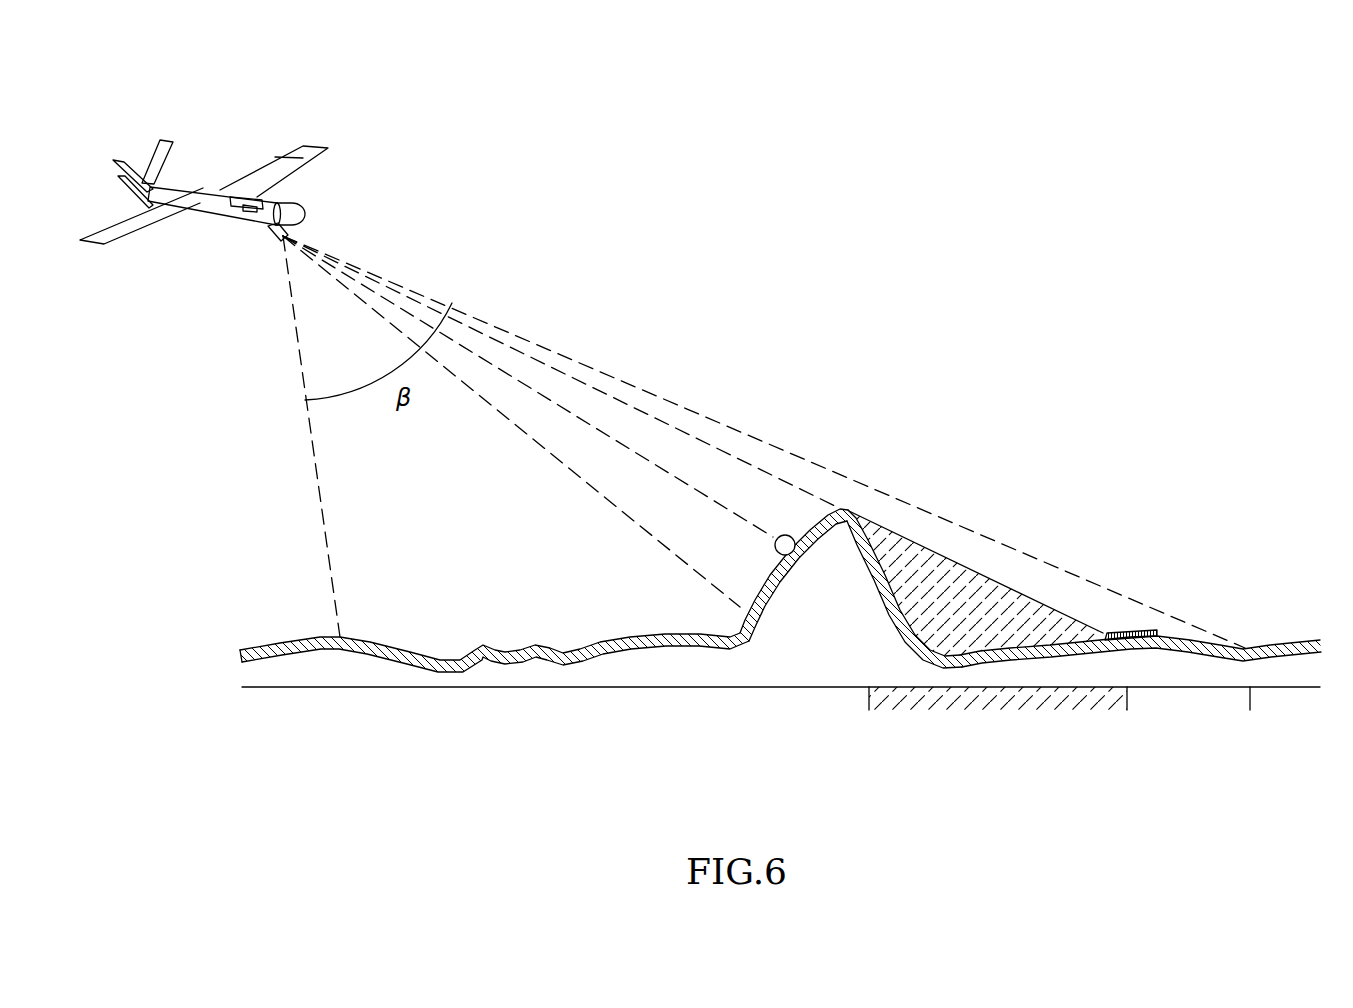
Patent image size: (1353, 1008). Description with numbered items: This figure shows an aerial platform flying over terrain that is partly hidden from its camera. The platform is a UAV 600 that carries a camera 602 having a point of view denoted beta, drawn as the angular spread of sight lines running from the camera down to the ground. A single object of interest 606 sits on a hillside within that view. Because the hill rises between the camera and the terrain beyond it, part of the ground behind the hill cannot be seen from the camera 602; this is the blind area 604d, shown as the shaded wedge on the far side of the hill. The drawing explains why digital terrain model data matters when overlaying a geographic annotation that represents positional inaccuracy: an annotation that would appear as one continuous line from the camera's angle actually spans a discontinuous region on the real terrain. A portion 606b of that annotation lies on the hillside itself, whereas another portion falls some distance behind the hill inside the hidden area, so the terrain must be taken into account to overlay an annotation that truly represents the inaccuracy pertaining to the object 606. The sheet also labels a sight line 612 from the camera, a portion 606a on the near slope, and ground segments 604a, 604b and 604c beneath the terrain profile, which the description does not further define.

The UAV 600 is at (321, 127).
The camera 602 is at (262, 246).
The illuminated terrain region 604a is at (869, 722).
The illuminated terrain region 604b is at (1250, 722).
The partially shadowed terrain region 604c is at (1135, 637).
The blind area 604d is at (950, 573).
The object of interest 606 is at (786, 522).
The front hill slope 606a is at (765, 577).
The portion of the geographic annotation 606b is at (787, 551).
The sensor line of sight 612 is at (1027, 560).